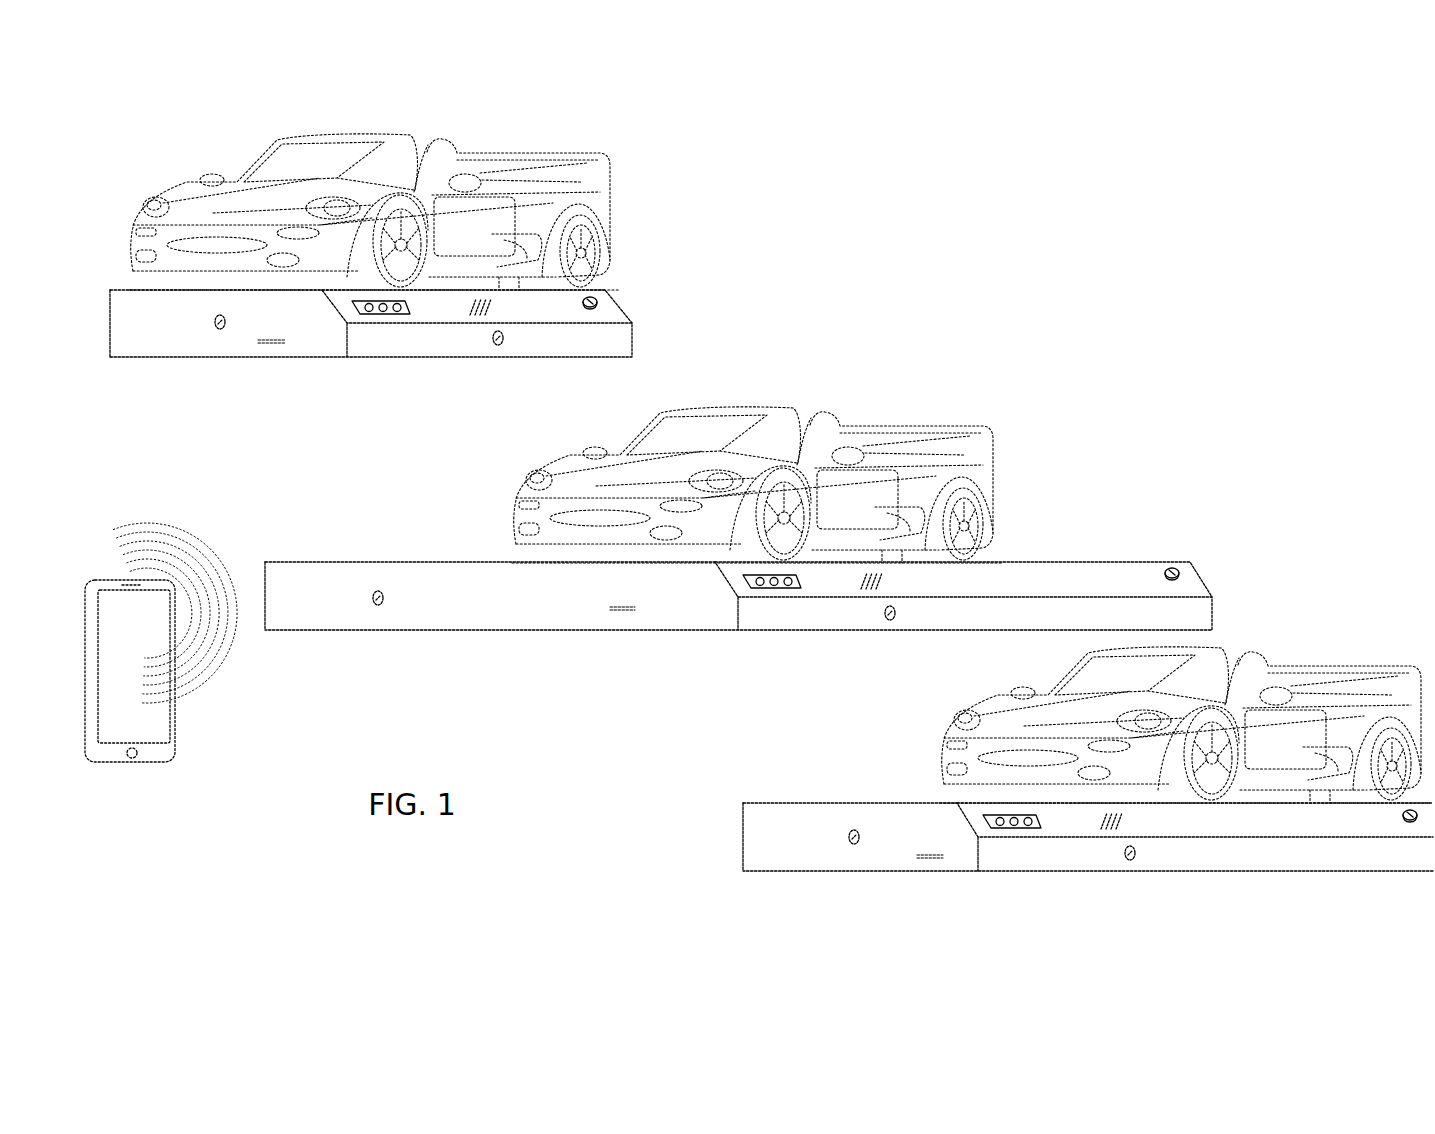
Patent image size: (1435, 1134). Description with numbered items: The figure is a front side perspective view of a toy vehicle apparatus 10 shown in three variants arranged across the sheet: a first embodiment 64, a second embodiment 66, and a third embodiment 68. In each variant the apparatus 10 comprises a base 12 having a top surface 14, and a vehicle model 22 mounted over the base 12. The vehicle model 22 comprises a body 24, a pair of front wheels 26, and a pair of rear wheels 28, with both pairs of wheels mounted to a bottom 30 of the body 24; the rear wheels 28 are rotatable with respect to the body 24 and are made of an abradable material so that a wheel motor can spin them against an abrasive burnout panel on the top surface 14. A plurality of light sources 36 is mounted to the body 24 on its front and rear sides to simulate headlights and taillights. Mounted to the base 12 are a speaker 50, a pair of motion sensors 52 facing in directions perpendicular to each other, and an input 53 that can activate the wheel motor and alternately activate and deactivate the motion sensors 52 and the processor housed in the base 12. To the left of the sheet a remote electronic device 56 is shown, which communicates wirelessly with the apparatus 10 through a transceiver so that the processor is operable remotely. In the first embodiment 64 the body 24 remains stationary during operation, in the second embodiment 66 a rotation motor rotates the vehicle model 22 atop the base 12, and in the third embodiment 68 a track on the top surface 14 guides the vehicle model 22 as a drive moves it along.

The toy vehicle apparatus 10 is at (668, 232).
The base 12 is at (318, 337).
The top surface 14 is at (130, 290).
The vehicle model 22 is at (262, 146).
The body 24 is at (487, 200).
The front wheels 26 is at (195, 283).
The rear wheels 28 is at (590, 252).
The bottom 30 is at (541, 270).
The light sources 36 is at (330, 207).
The speaker 50 is at (470, 320).
The motion sensors 52 is at (218, 329).
The input 53 is at (600, 302).
The remote electronic device 56 is at (153, 730).
The first embodiment 64 is at (100, 362).
The second embodiment 66 is at (285, 660).
The third embodiment 68 is at (722, 868).